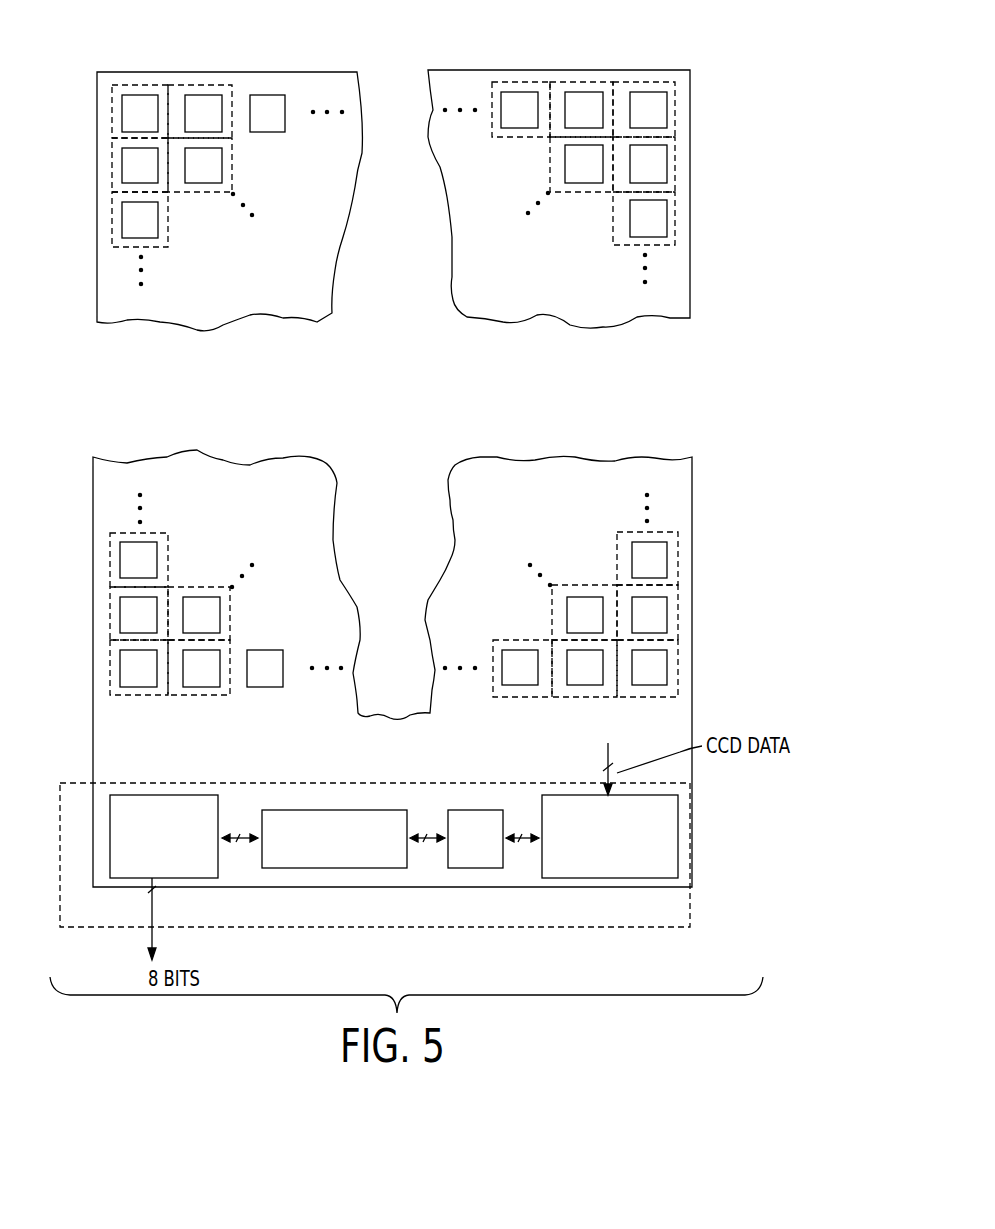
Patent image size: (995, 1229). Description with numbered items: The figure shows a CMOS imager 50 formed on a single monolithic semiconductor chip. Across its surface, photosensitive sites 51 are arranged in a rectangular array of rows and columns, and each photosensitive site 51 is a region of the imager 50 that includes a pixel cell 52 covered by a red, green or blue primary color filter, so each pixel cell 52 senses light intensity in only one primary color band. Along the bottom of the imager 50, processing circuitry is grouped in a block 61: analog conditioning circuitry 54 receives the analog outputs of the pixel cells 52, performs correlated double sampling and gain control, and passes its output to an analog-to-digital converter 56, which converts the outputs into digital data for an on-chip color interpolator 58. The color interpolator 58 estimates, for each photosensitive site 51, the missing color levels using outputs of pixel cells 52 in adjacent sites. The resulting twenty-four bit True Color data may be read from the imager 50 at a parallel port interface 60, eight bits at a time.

The CMOS imager 50 is at (691, 117).
The photosensitive site 51 is at (182, 83).
The pixel cell 52 is at (217, 92).
The analog conditioning circuitry 54 is at (560, 878).
The analog-to-digital converter 56 is at (465, 868).
The color interpolator 58 is at (313, 868).
The parallel port interface 60 is at (188, 795).
The processing circuitry block 61 is at (690, 822).